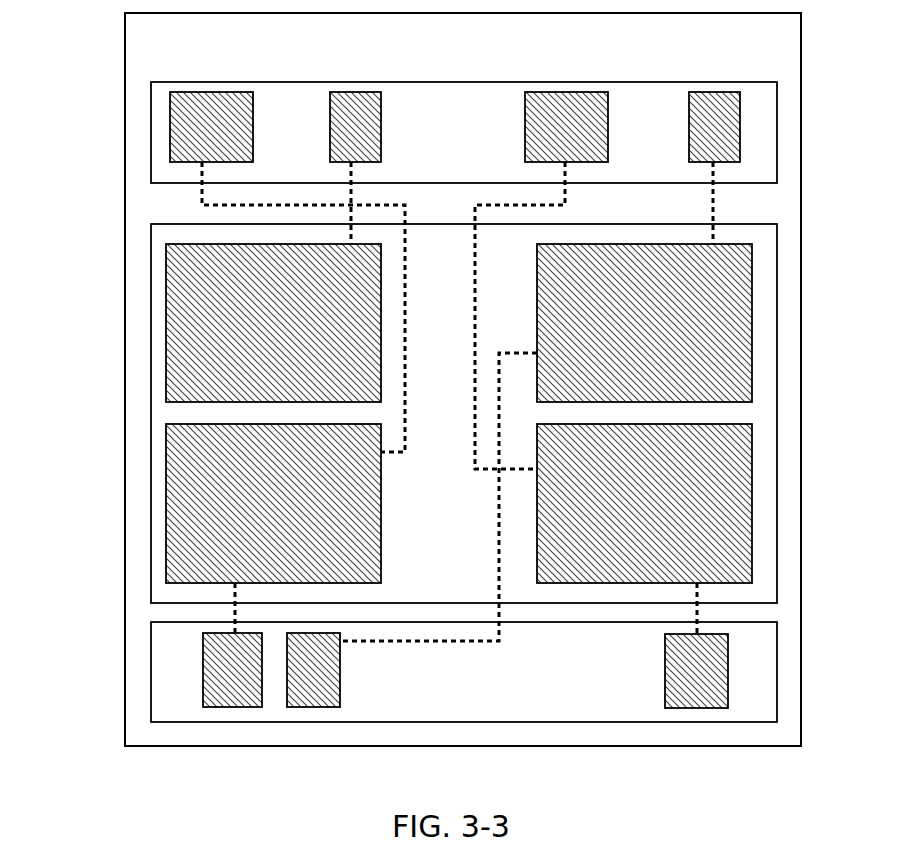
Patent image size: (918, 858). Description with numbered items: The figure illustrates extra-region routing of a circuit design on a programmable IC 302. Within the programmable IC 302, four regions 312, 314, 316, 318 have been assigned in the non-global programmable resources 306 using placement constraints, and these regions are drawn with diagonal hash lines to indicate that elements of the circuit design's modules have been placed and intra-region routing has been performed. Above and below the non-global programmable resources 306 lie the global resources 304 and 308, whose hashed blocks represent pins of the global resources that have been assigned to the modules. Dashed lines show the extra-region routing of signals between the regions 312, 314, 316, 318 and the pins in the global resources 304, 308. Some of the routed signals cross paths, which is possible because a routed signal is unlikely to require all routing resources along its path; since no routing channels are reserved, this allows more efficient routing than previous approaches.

The programmable IC 302 is at (463, 379).
The global resources 304 is at (151, 84).
The non-global programmable resources 306 is at (151, 224).
The global resources 308 is at (151, 624).
The region 312 is at (166, 295).
The region 314 is at (166, 480).
The region 316 is at (752, 293).
The region 318 is at (752, 477).